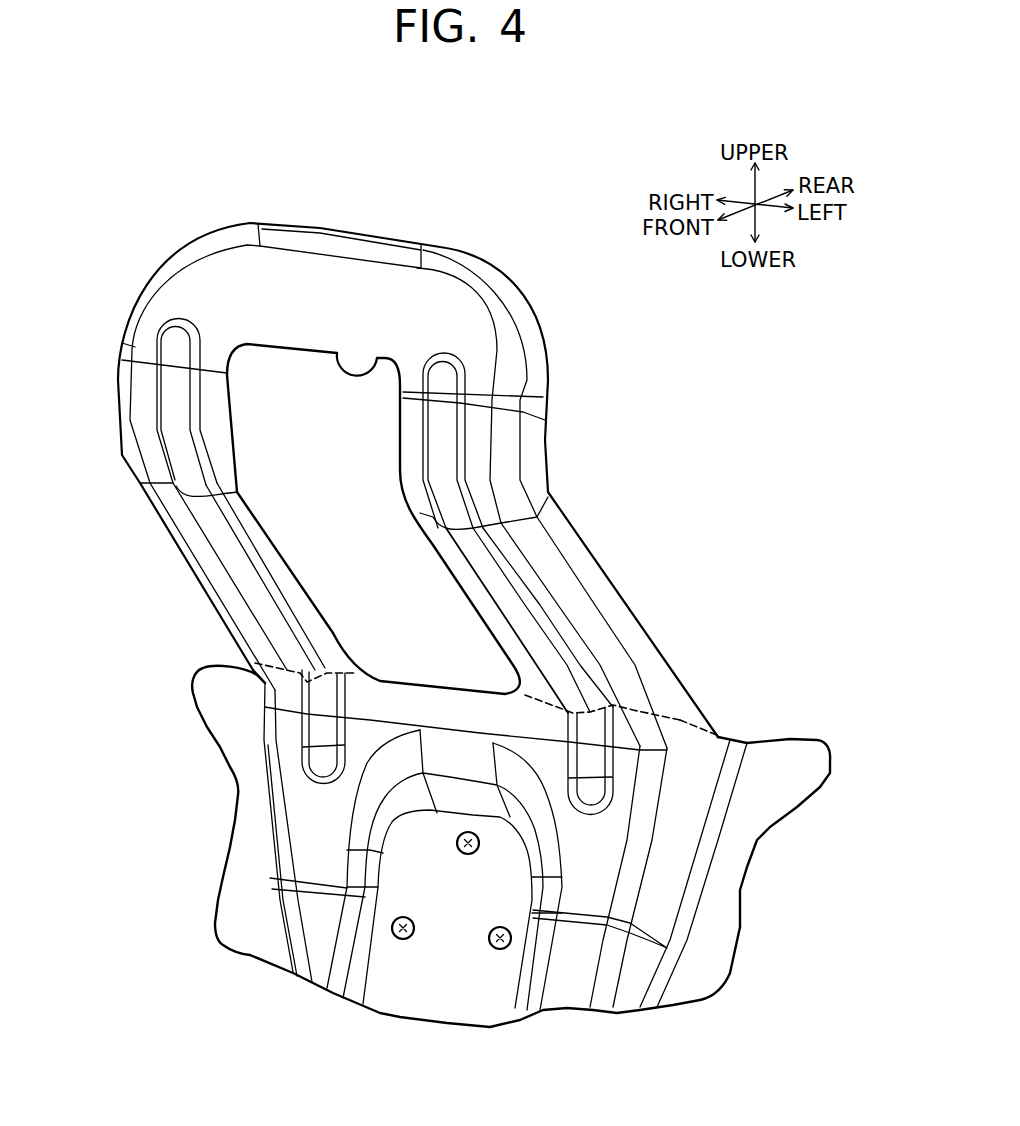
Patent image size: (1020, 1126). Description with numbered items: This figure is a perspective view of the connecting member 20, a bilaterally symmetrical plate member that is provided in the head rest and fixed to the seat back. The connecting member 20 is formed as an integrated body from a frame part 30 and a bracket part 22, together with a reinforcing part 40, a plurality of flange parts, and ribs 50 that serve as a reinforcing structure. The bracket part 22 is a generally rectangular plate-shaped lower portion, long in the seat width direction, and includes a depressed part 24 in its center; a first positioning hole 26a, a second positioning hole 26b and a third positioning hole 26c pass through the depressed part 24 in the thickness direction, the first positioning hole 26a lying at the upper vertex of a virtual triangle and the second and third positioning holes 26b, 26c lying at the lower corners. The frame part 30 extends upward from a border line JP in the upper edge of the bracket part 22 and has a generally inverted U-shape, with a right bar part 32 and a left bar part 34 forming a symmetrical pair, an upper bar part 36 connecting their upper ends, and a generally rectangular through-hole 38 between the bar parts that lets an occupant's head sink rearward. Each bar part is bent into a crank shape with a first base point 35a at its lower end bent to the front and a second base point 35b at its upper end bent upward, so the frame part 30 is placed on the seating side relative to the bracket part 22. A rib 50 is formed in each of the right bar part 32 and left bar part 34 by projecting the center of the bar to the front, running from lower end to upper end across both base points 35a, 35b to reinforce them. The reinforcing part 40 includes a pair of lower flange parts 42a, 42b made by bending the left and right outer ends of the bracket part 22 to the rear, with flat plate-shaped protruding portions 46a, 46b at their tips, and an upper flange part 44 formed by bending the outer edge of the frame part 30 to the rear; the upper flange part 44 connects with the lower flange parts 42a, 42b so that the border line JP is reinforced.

The connecting member 20 is at (467, 163).
The bracket part 22 is at (692, 918).
The depressed part 24 is at (443, 970).
The first positioning hole 26a is at (468, 855).
The second positioning hole 26b is at (403, 940).
The third positioning hole 26c is at (500, 950).
The frame part 30 is at (405, 448).
The right bar part 32 is at (160, 521).
The left bar part 34 is at (587, 535).
The first base point 35a is at (375, 667).
The second base point 35b is at (240, 451).
The upper bar part 36 is at (304, 219).
The through-hole 38 is at (385, 356).
The reinforcing part 40 is at (587, 850).
The lower flange part 42a is at (283, 925).
The lower flange part 42b is at (623, 972).
The upper flange part 44 is at (471, 258).
The protruding portion 46a is at (214, 691).
The protruding portion 46b is at (807, 760).
The rib 50 is at (240, 578).
The border line JP is at (722, 732).